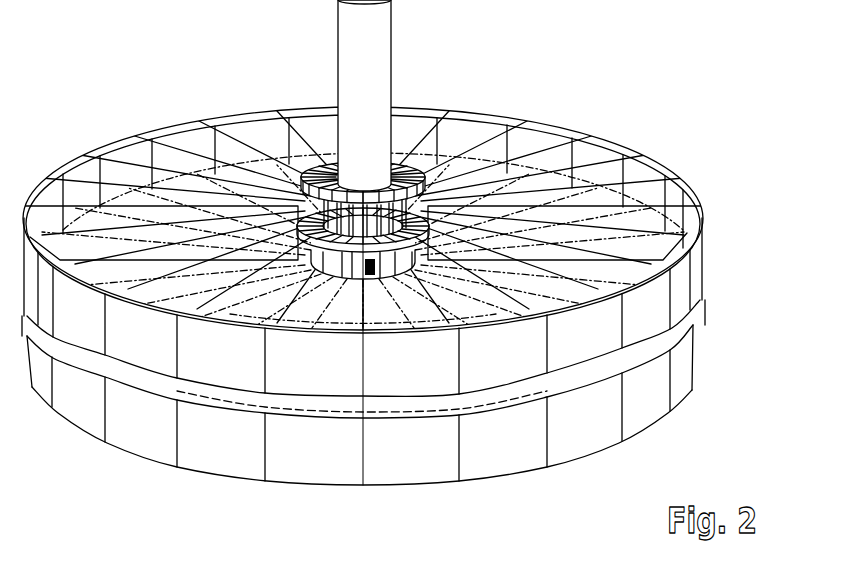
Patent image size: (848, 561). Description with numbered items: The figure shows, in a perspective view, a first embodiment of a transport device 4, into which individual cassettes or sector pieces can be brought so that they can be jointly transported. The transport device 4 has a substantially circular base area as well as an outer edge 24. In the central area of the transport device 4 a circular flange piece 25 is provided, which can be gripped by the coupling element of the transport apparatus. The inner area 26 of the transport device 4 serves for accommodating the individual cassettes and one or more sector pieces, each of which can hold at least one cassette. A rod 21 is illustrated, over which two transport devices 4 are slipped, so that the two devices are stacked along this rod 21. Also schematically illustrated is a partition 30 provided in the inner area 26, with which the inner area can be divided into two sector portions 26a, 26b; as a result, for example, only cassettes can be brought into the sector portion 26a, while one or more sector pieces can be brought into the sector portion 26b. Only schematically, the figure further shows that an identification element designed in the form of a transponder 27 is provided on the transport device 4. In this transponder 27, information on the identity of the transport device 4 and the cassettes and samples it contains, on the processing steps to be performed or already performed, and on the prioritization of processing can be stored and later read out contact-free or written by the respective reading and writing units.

The transport device 4 is at (409, 259).
The rod 21 is at (370, 50).
The outer edge 24 is at (693, 285).
The circular flange piece 25 is at (415, 158).
The inner area 26 is at (363, 207).
The sector portion 26a is at (220, 190).
The sector portion 26b is at (222, 296).
The transponder 27 is at (372, 258).
The partition 30 is at (80, 195).